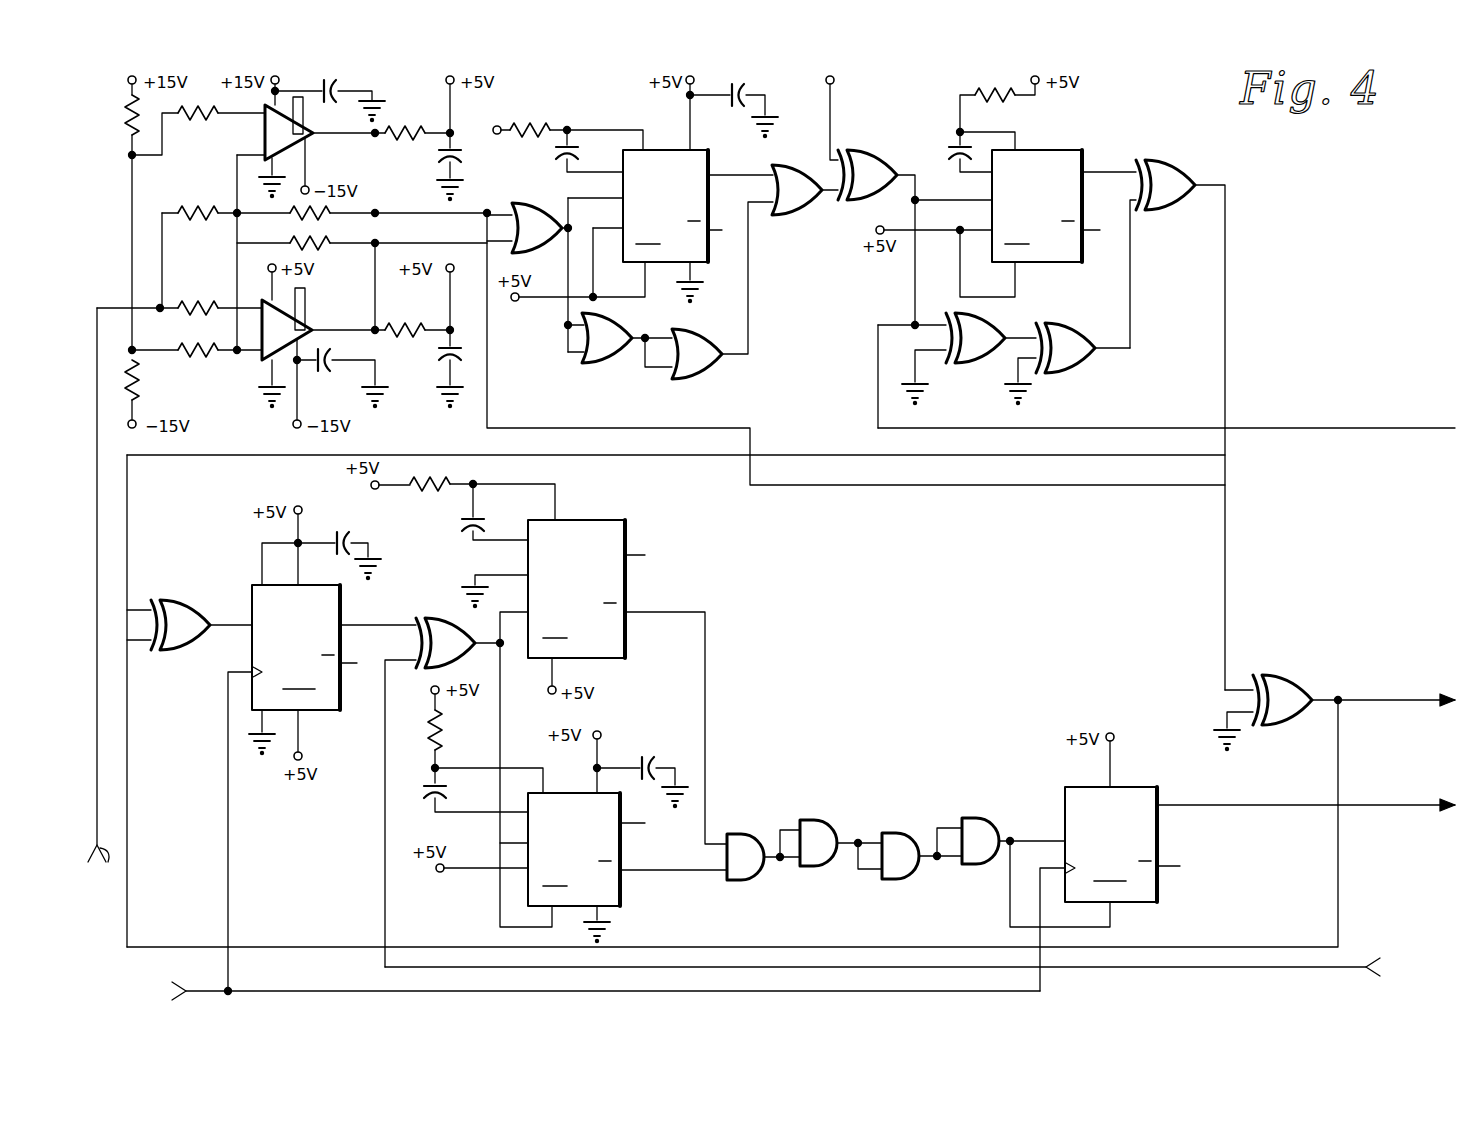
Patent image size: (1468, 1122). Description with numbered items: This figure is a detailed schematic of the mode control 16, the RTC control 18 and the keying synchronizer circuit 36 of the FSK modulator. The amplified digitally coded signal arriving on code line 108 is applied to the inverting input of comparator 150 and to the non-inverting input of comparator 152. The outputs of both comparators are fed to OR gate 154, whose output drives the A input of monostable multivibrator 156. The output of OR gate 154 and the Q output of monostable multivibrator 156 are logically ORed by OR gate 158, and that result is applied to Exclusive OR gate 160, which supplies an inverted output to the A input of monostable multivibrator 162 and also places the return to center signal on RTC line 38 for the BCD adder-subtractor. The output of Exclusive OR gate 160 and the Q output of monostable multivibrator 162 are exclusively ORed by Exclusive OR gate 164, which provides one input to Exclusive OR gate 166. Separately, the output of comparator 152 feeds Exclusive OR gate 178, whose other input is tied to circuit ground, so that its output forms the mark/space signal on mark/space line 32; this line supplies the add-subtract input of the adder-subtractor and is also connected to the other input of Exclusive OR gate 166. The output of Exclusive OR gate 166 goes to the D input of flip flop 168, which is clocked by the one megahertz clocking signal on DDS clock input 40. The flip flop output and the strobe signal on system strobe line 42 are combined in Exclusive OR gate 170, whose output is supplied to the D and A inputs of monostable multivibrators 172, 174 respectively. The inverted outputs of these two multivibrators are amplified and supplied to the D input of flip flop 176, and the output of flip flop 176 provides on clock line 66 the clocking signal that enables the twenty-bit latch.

The mode control 16 is at (514, 98).
The RTC control 18 is at (870, 108).
The mark/space line 32 is at (1400, 703).
The keying synchronizer circuit 36 is at (746, 586).
The RTC line 38 is at (1392, 432).
The DDS clock input 40 is at (258, 991).
The system strobe line 42 is at (1345, 967).
The clock line 66 is at (1400, 805).
The code line 108 is at (97, 598).
The comparator 150 is at (308, 336).
The comparator 152 is at (316, 139).
The OR gate 154 is at (548, 210).
The monostable multivibrator 156 is at (712, 170).
The OR gate 158 is at (778, 214).
The Exclusive OR gate 160 is at (866, 152).
The monostable multivibrator 162 is at (1046, 150).
The Exclusive OR gate 164 is at (1170, 160).
The Exclusive OR gate 166 is at (172, 600).
The flip flop 168 is at (318, 714).
The Exclusive OR gate 170 is at (442, 616).
The monostable multivibrator 172 is at (578, 519).
The monostable multivibrator 174 is at (622, 883).
The flip flop 176 is at (1070, 785).
The Exclusive OR gate 178 is at (1302, 712).